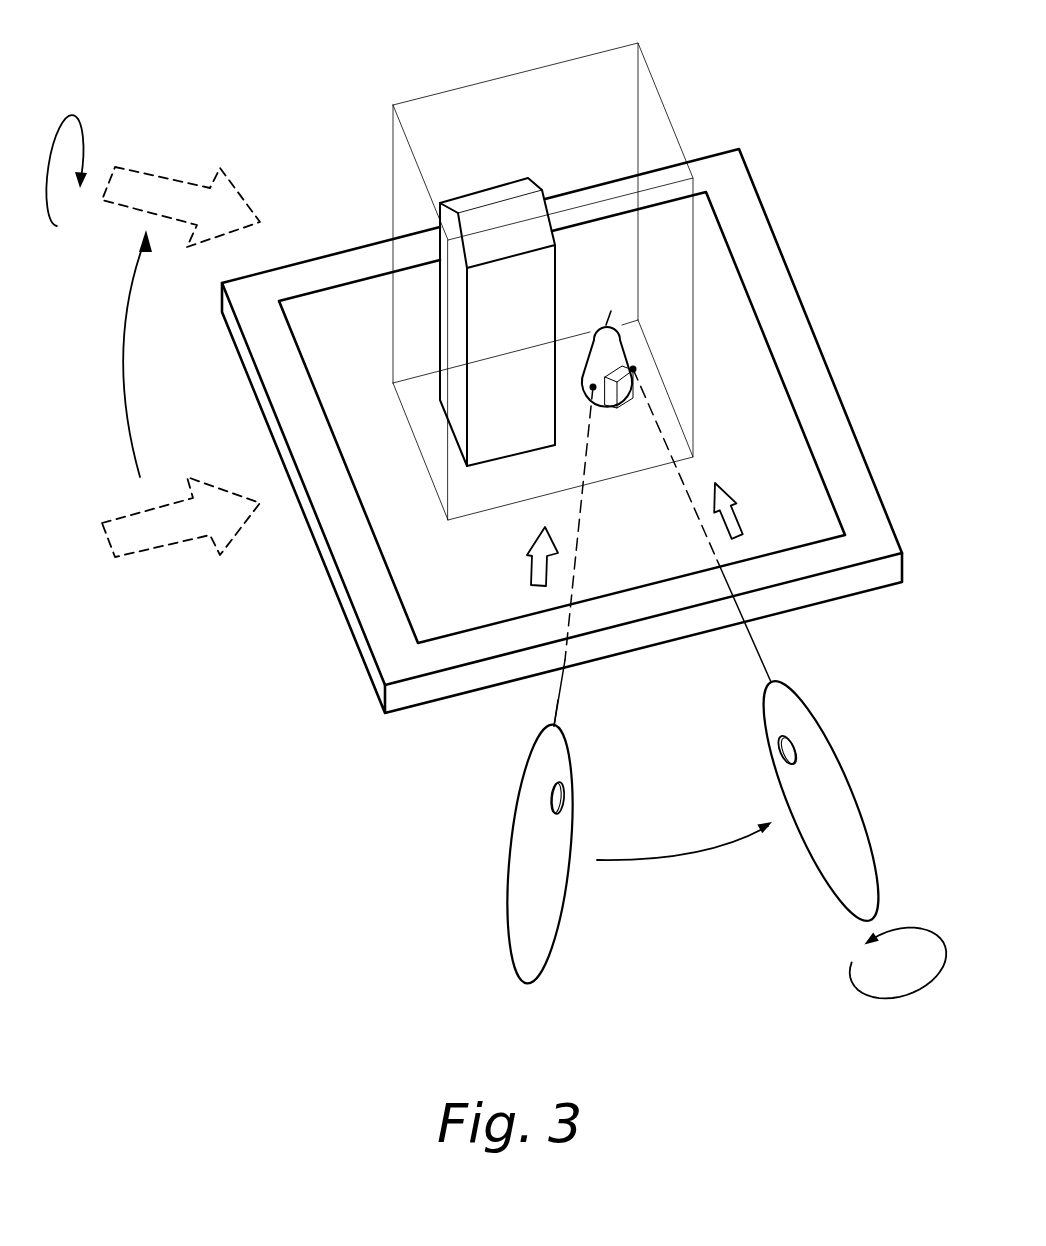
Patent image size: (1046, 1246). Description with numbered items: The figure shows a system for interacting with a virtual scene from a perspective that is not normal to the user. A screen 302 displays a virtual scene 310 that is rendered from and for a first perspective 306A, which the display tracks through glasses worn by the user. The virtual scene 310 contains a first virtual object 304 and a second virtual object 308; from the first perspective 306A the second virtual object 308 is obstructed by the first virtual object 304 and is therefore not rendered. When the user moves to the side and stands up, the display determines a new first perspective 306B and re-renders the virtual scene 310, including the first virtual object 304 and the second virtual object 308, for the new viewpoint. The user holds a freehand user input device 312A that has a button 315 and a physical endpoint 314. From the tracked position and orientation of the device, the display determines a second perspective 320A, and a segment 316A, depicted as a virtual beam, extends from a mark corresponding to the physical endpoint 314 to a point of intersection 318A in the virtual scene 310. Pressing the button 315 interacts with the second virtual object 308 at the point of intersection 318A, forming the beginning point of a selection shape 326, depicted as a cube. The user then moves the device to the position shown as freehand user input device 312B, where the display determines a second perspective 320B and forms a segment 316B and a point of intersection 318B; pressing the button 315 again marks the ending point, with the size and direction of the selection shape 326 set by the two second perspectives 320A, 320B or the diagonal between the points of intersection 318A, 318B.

The screen 302 is at (348, 313).
The first virtual object 304 is at (492, 187).
The first perspective 306A is at (147, 552).
The new first perspective 306B is at (150, 172).
The second virtual object 308 is at (592, 372).
The virtual scene 310 is at (511, 75).
The freehand user input device 312A is at (562, 908).
The freehand user input device 312B is at (823, 870).
The physical endpoint 314 is at (555, 723).
The button 315 is at (567, 797).
The segment 316A is at (580, 512).
The segment 316B is at (711, 546).
The point of intersection 318A is at (593, 387).
The point of intersection 318B is at (633, 369).
The second perspective 320A is at (530, 567).
The second perspective 320B is at (736, 512).
The selection shape 326 is at (628, 405).